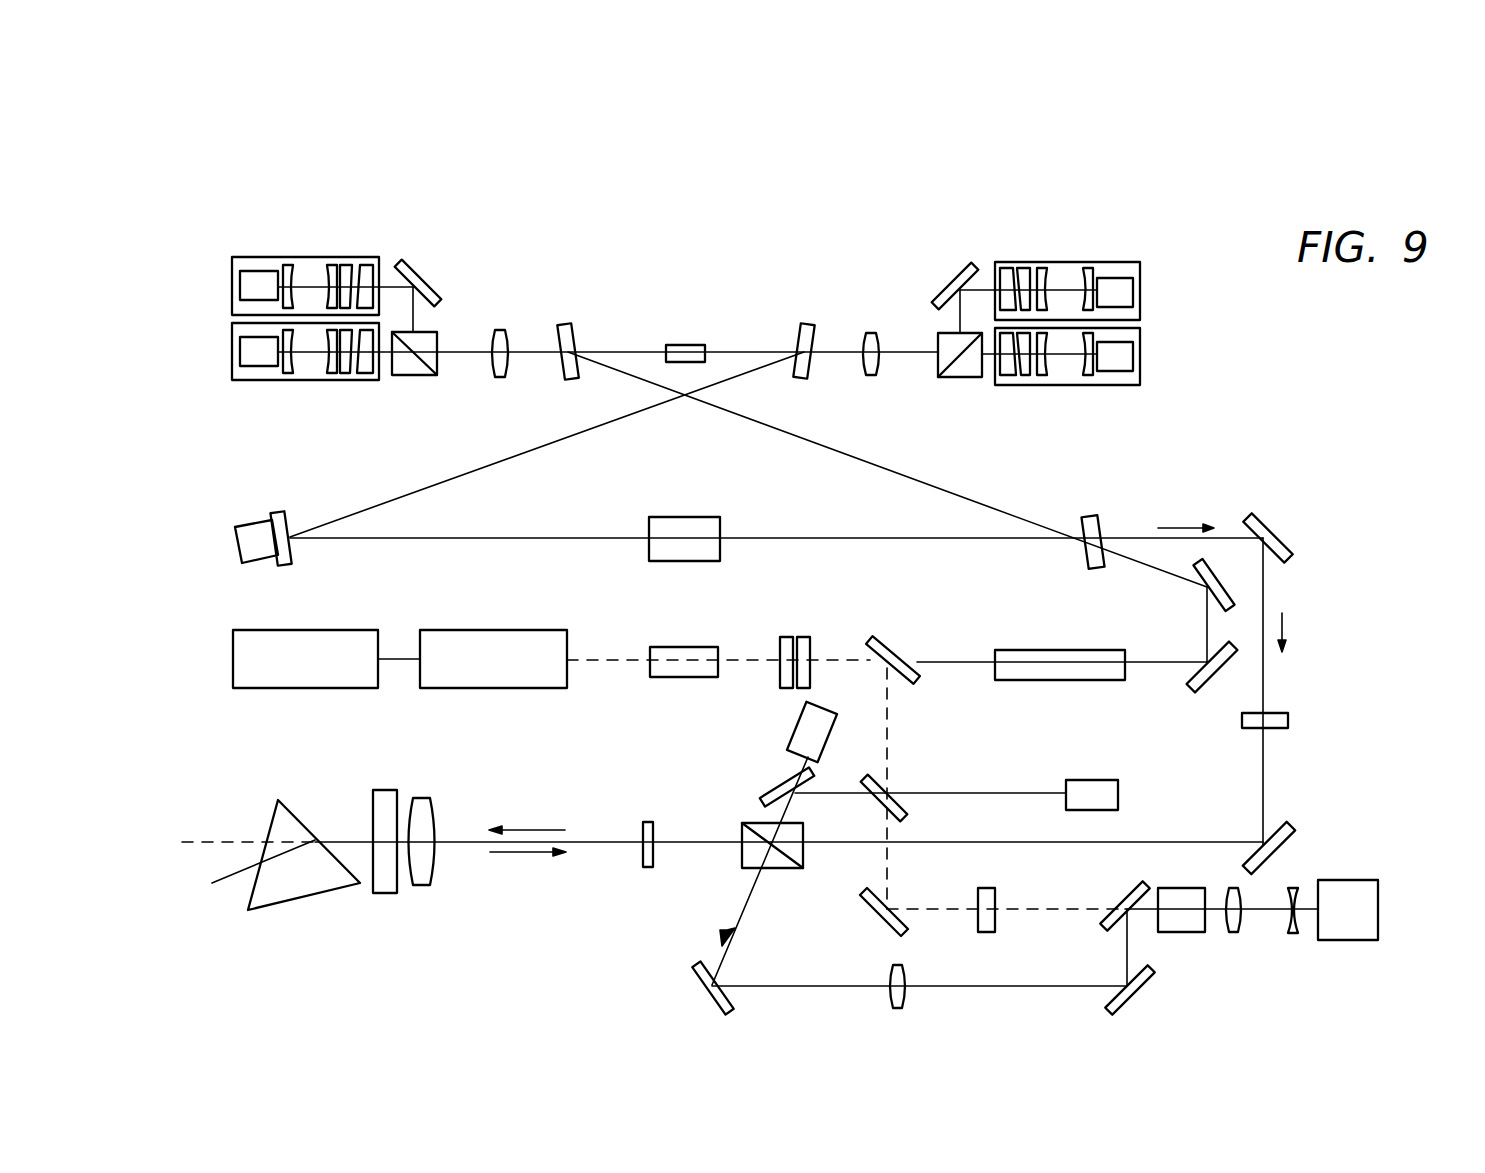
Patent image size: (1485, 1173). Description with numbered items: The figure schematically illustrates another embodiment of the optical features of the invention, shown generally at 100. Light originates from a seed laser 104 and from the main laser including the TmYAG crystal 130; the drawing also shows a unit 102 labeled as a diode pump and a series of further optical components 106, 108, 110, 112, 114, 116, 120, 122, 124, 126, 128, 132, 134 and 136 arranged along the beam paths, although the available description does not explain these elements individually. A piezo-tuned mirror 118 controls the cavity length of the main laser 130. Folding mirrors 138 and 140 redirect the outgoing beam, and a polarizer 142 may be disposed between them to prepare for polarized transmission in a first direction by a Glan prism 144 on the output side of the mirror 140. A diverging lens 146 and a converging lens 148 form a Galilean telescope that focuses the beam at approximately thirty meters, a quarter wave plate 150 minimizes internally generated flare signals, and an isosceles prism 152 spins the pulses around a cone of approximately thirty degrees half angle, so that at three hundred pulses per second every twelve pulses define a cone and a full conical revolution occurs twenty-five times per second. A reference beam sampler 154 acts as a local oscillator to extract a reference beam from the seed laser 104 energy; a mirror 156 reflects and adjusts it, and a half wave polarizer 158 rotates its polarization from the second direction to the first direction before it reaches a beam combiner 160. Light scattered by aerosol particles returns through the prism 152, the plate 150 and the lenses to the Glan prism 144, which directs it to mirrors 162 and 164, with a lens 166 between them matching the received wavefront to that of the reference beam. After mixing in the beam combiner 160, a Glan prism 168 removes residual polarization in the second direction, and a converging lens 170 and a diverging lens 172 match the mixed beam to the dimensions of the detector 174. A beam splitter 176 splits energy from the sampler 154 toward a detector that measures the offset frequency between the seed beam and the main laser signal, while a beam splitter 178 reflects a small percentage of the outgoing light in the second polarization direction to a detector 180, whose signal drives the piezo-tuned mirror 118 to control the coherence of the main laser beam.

The laser system 100 is at (674, 241).
The diode pump 102 is at (308, 638).
The seed laser 104 is at (494, 638).
The isolator 106 is at (708, 645).
The amplifier rod 108 is at (1075, 649).
The mirror 110 is at (1181, 680).
The mirror 112 is at (1230, 582).
The plate 114 is at (1124, 527).
The optical element 116 is at (706, 519).
The piezo-tuned mirror 118 is at (253, 522).
The plate 120 is at (839, 369).
The plate 122 is at (603, 333).
The laser diode 124 is at (689, 299).
The lens 126 is at (712, 294).
The prisms 128 is at (685, 294).
The TmYAG crystal 130 is at (710, 335).
The mirror 132 is at (687, 278).
The beam splitter cube 134 is at (718, 373).
The lens 136 is at (722, 356).
The folding mirror 138 is at (1294, 532).
The folding mirror 140 is at (1300, 835).
The polarizer 142 is at (1292, 739).
The Glan prism 144 is at (805, 838).
The diverging lens 146 is at (681, 826).
The converging lens 148 is at (451, 827).
The quarter wave plate 150 is at (417, 815).
The isosceles prism 152 is at (290, 866).
The reference beam sampler 154 is at (911, 646).
The mirror 156 is at (865, 920).
The half wave polarizer 158 is at (1017, 924).
The beam combiner 160 is at (1111, 898).
The mirror 162 is at (684, 987).
The mirror 164 is at (1150, 999).
The lens 166 is at (935, 995).
The Glan prism 168 is at (1202, 929).
The converging lens 170 is at (1208, 895).
The diverging lens 172 is at (1322, 932).
The detector 174 is at (1365, 893).
The beam splitter 176 is at (1017, 791).
The beam splitter 178 is at (768, 770).
The detector 180 is at (839, 732).